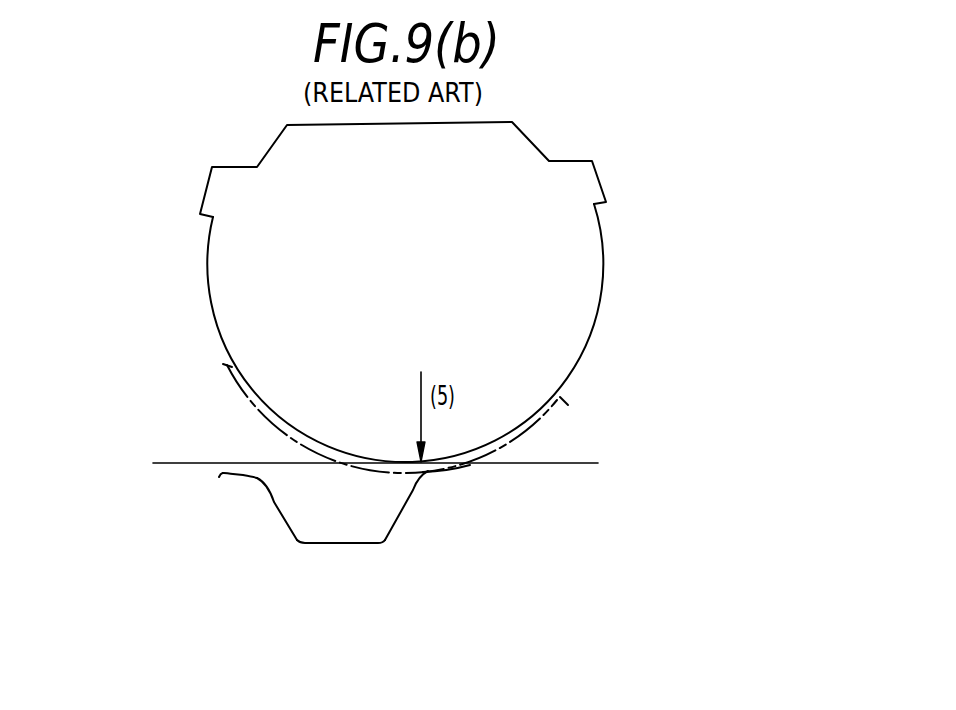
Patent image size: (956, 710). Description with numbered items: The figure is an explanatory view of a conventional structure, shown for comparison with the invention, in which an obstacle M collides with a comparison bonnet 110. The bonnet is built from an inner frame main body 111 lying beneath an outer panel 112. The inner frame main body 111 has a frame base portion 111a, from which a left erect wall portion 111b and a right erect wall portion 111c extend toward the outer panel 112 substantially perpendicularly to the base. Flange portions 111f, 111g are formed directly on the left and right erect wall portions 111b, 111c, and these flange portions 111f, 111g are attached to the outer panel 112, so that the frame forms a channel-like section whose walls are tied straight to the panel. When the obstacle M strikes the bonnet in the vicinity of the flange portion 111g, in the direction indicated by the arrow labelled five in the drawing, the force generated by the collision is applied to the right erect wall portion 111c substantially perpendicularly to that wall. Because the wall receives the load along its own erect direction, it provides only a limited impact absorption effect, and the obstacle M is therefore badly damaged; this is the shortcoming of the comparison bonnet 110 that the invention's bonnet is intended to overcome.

The comparison bonnet 110 is at (645, 160).
The obstacle M is at (604, 268).
The outer panel 112 is at (582, 422).
The inner frame main body 111 is at (359, 499).
The frame base portion 111a is at (353, 543).
The left erect wall portion 111b is at (276, 513).
The right erect wall portion 111c is at (415, 498).
The flange portion 111f is at (225, 467).
The flange portion 111g is at (460, 467).